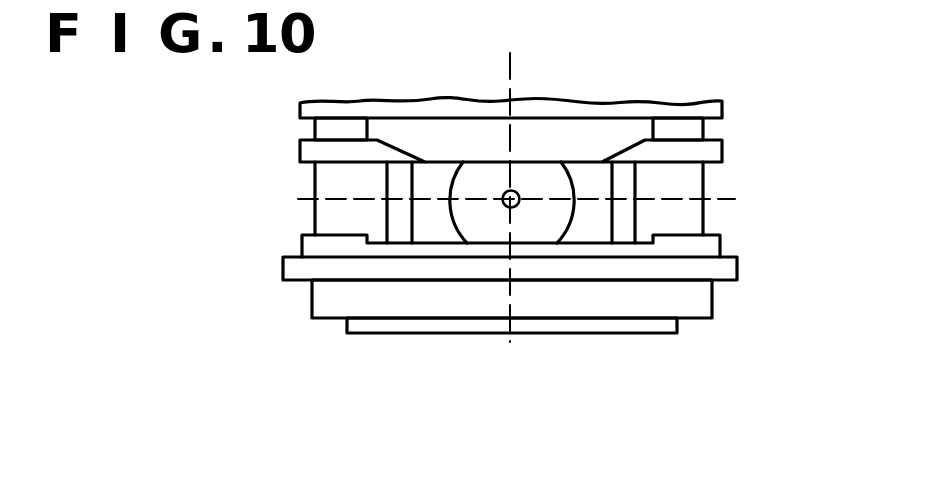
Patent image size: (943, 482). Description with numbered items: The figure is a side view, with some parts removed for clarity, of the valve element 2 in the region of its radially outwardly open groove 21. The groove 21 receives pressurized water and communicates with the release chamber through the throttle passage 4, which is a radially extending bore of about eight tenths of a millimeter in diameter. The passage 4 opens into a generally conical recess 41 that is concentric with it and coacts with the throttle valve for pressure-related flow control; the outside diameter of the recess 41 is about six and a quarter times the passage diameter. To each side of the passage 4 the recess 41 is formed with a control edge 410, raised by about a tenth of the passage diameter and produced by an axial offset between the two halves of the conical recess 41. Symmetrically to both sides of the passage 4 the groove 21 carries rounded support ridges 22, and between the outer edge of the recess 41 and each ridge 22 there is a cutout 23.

The valve element 2 is at (264, 266).
The groove 21 is at (338, 163).
The support ridges 22 is at (387, 187).
The cutout 23 is at (425, 222).
The throttle passage 4 is at (508, 208).
The conical recess 41 is at (539, 227).
The control edge 410 is at (519, 199).